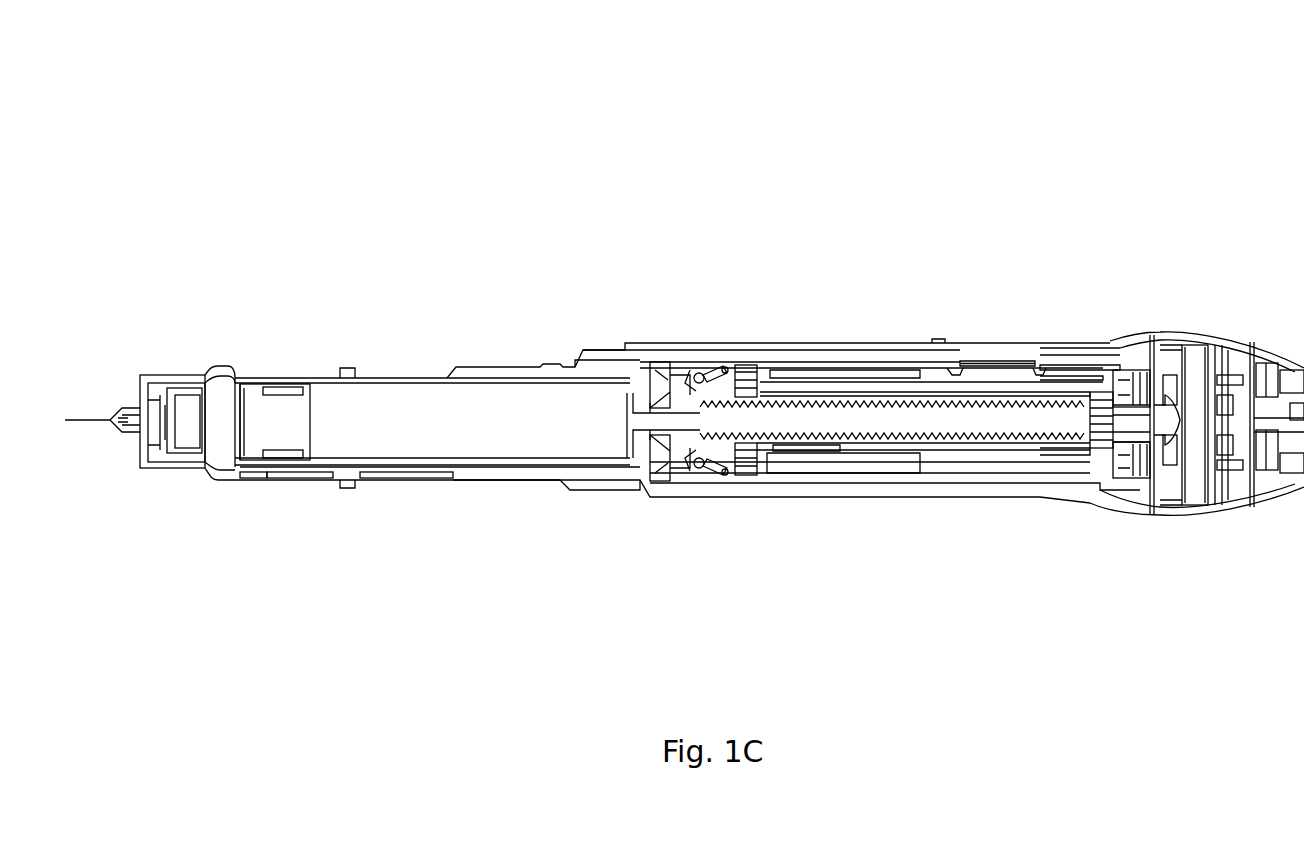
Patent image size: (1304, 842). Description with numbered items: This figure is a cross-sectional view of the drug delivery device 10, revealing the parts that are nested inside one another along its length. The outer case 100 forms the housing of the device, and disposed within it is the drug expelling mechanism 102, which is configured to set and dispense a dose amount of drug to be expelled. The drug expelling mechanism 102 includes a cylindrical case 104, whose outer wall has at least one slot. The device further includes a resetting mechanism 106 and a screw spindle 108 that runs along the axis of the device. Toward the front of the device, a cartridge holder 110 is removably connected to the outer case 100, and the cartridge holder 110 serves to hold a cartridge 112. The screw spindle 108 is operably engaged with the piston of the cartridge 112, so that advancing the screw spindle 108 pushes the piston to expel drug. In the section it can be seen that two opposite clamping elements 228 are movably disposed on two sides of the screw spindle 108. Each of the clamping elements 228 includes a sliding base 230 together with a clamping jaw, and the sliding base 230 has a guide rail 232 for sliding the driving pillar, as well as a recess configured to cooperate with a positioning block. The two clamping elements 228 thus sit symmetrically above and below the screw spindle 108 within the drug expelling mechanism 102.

The drug delivery device 10 is at (398, 162).
The outer case 100 is at (912, 355).
The drug expelling mechanism 102 is at (994, 362).
The cylindrical case 104 is at (958, 475).
The resetting mechanism 106 is at (688, 372).
The screw spindle 108 is at (853, 420).
The cartridge holder 110 is at (550, 365).
The cartridge 112 is at (482, 467).
The clamping element 228 is at (744, 373).
The sliding base 230 is at (705, 370).
The guide rail 232 is at (725, 370).